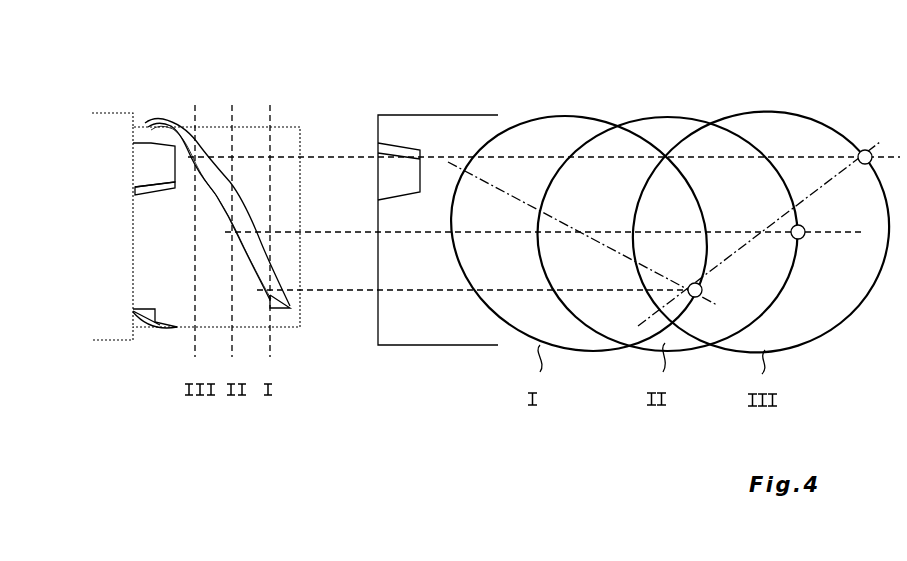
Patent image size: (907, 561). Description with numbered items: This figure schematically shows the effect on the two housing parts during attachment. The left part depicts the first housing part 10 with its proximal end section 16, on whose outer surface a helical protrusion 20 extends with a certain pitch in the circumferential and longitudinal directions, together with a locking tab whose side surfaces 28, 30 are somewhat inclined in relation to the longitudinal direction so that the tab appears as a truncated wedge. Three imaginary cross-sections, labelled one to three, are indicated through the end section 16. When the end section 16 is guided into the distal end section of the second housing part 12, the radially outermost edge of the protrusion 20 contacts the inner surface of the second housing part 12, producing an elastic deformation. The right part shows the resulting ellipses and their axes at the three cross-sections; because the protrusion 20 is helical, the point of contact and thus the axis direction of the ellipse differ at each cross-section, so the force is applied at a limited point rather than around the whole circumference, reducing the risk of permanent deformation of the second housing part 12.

The first housing part 10 is at (115, 265).
The second housing part 12 is at (560, 118).
The proximal end section 16 is at (289, 137).
The protrusion 20 is at (188, 130).
The side surface 28 is at (148, 144).
The side surface 30 is at (150, 187).